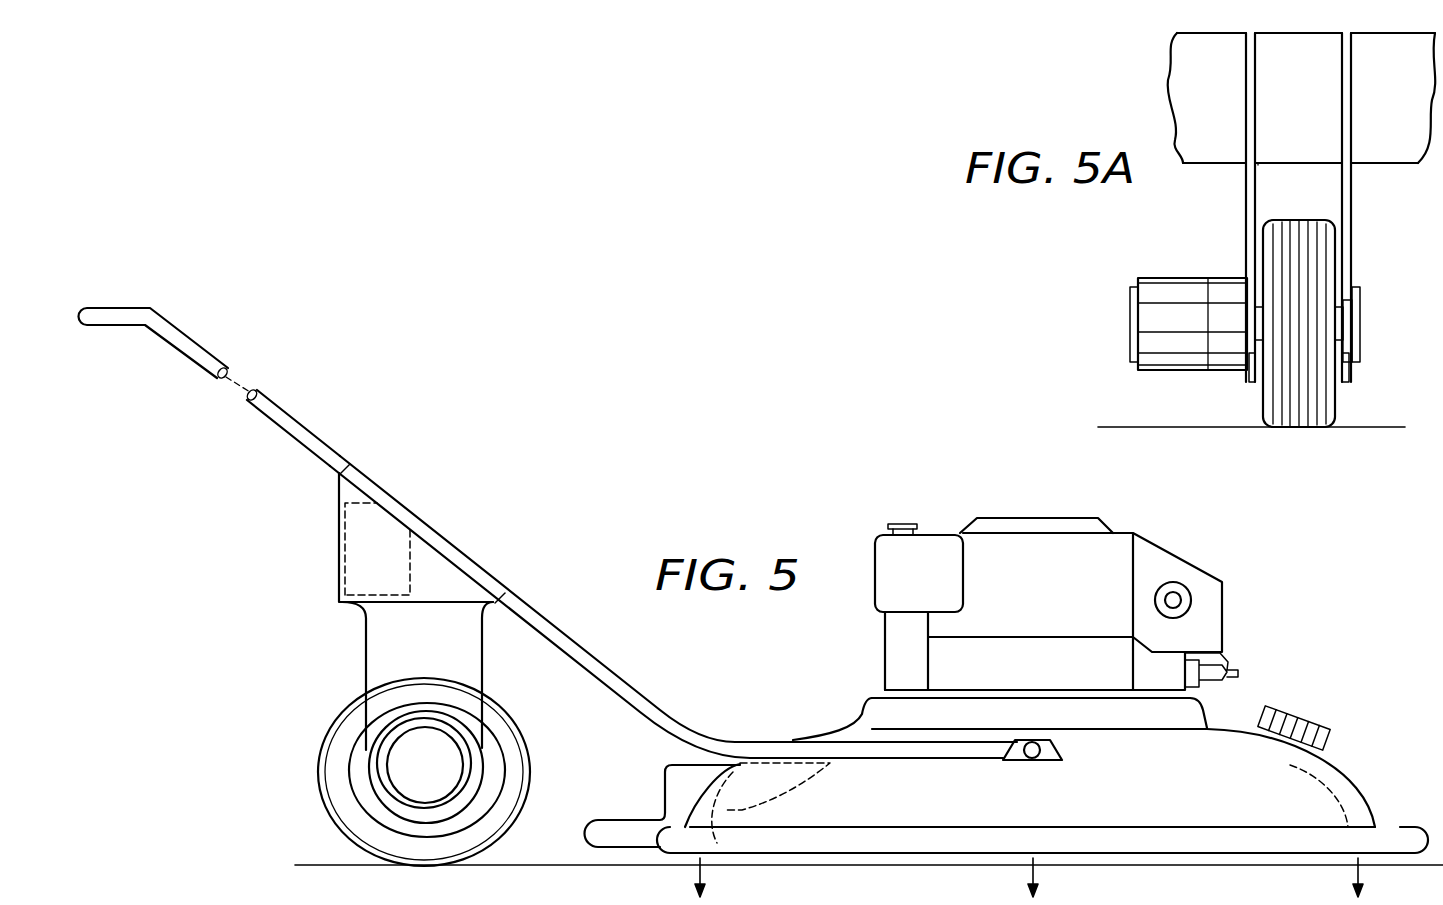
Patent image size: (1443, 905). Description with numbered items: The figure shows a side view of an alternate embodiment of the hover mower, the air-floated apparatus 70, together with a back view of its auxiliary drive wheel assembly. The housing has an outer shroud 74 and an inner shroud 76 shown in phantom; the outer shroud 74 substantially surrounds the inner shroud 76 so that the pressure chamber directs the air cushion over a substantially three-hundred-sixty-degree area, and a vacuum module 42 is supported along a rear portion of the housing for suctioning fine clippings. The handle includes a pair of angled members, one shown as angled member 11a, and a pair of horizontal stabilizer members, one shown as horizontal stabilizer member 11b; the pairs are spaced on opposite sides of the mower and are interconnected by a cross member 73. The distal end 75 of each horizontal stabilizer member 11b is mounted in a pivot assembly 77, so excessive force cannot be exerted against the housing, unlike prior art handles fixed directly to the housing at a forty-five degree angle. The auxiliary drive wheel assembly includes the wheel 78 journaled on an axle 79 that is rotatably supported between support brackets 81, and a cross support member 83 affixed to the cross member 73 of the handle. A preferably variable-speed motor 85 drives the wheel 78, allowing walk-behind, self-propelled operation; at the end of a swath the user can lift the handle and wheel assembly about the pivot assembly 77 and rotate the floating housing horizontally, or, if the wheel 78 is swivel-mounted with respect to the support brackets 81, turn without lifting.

In FIG. 5, the air-floated apparatus 70 is at (1042, 707).
In FIG. 5, the angled member 11a is at (570, 632).
In FIG. 5, the horizontal stabilizer member 11b is at (767, 741).
In FIG. 5, the vacuum module 42 is at (642, 804).
In FIG. 5, the cross member 73 is at (435, 535).
In FIG. 5A, the cross member 73 is at (1222, 155).
In FIG. 5, the outer shroud 74 is at (1373, 812).
In FIG. 5, the distal end 75 is at (984, 752).
In FIG. 5, the inner shroud 76 is at (1362, 773).
In FIG. 5, the pivot assembly 77 is at (1058, 745).
In FIG. 5, the wheel 78 is at (337, 787).
In FIG. 5A, the wheel 78 is at (1337, 393).
In FIG. 5, the axle 79 is at (433, 733).
In FIG. 5, the support bracket 81 is at (376, 646).
In FIG. 5A, the support bracket 81 is at (1245, 100).
In FIG. 5, the cross support member 83 is at (338, 572).
In FIG. 5A, the cross support member 83 is at (1323, 60).
In FIG. 5A, the motor 85 is at (1175, 277).